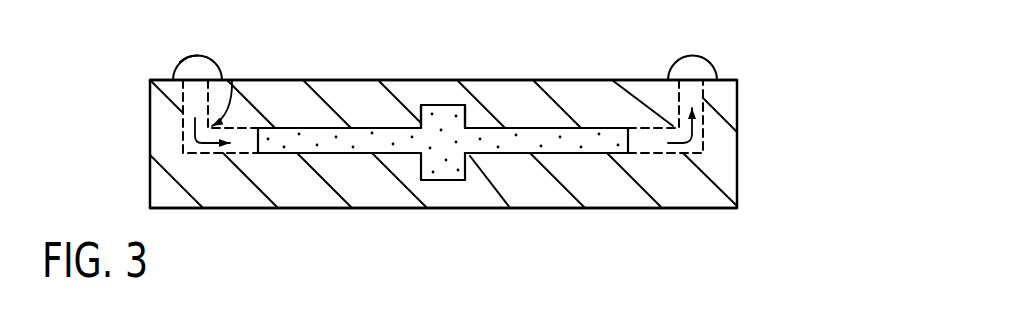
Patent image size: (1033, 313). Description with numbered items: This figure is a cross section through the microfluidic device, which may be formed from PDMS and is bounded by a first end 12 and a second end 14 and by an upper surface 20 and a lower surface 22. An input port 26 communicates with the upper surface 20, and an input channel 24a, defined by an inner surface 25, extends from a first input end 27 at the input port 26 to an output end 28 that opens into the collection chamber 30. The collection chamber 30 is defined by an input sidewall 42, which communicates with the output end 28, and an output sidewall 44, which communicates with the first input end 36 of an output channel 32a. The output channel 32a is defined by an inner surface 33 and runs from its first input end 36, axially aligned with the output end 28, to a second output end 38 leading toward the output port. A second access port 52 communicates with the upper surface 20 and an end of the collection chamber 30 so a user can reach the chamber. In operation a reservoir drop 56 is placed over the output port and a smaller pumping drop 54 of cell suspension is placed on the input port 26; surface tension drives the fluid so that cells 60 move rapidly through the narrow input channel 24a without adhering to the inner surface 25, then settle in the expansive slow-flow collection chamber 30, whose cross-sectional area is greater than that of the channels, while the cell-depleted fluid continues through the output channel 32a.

The first end 12 is at (148, 145).
The second end 14 is at (737, 146).
The upper surface 20 is at (288, 79).
The lower surface 22 is at (288, 208).
The input channel 24a is at (373, 157).
The inner surface 25 is at (357, 150).
The input port 26 is at (176, 71).
The first input end 27 is at (238, 80).
The output end 28 is at (418, 127).
The collection chamber 30 is at (437, 112).
The output channel 32a is at (587, 155).
The inner surface 33 is at (524, 135).
The first input end 36 is at (470, 157).
The second output end 38 is at (674, 128).
The input sidewall 42 is at (438, 182).
The output sidewall 44 is at (455, 112).
The second access port 52 is at (195, 62).
The pumping drop 54 is at (190, 57).
The reservoir drop 56 is at (692, 56).
The cells 60 is at (303, 141).